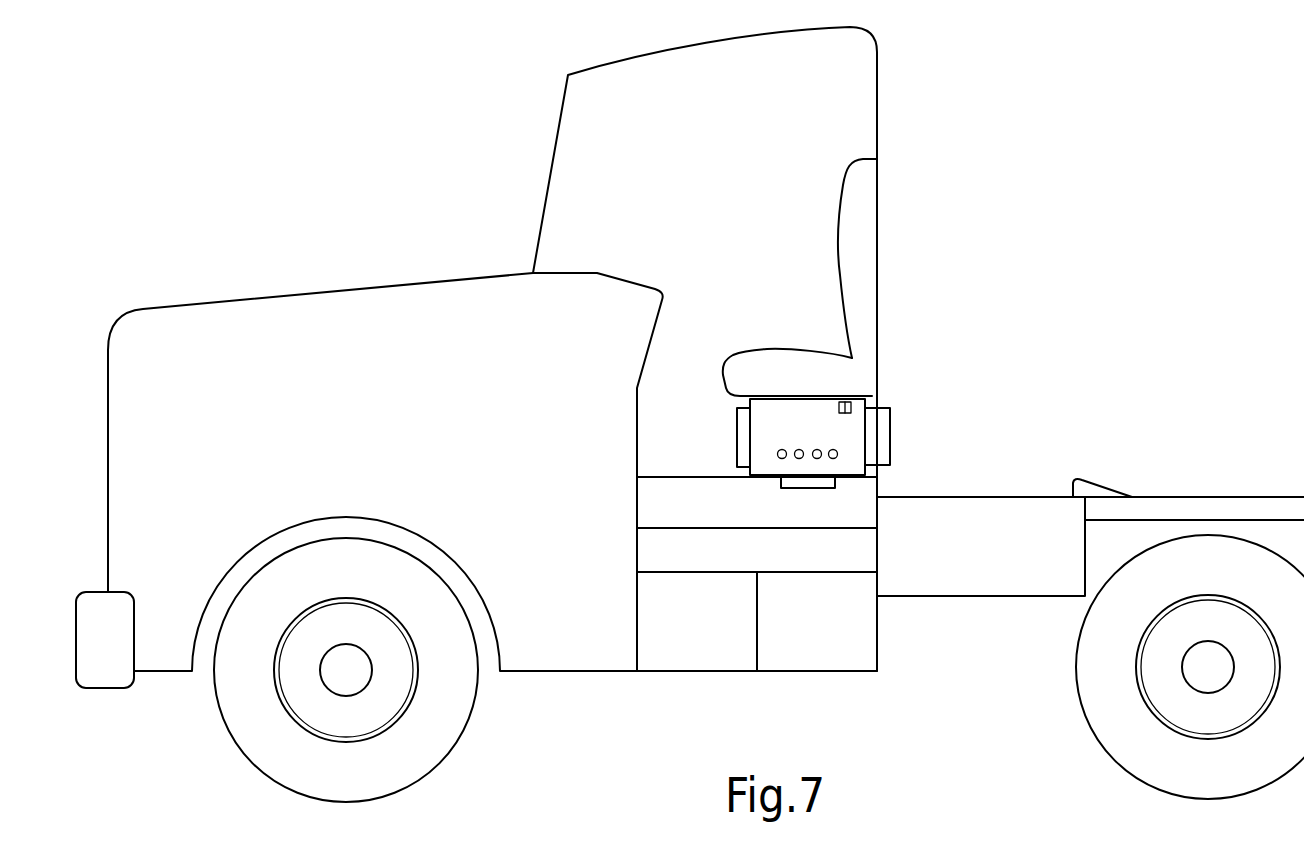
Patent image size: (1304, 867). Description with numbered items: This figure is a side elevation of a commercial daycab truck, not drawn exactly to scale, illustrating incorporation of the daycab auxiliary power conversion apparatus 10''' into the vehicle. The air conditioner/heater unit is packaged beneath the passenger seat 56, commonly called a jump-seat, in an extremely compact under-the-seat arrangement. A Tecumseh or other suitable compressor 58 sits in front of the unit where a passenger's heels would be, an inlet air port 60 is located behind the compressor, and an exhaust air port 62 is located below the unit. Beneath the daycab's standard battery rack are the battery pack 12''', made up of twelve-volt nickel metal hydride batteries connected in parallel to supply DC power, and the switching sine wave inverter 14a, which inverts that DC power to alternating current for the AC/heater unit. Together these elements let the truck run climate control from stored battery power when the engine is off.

The daycab auxiliary power conversion apparatus 10''' is at (690, 414).
The battery pack 12''' is at (817, 653).
The switching sine wave inverter 14a is at (698, 672).
The passenger seat 56 is at (780, 348).
The compressor 58 is at (737, 440).
The inlet air port 60 is at (891, 437).
The exhaust air port 62 is at (835, 488).